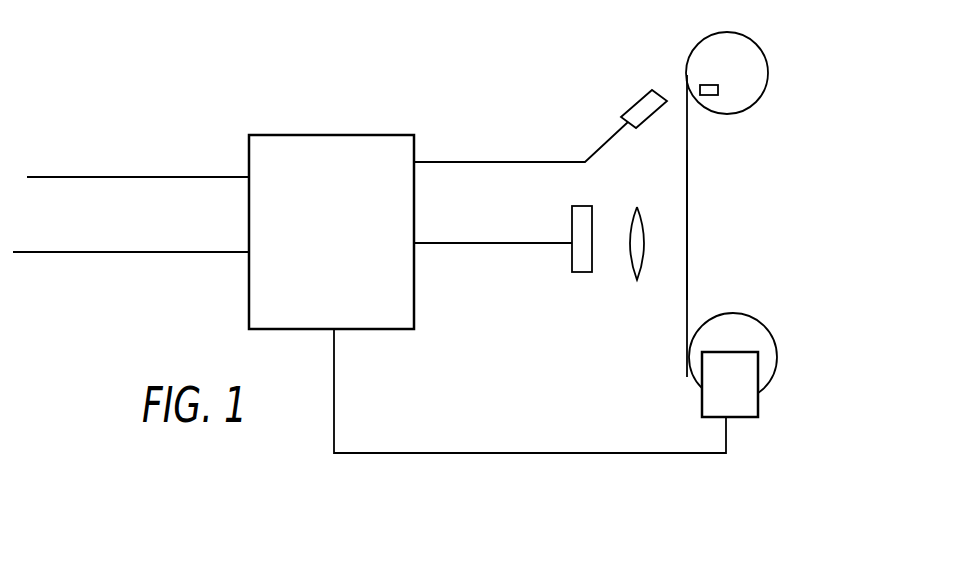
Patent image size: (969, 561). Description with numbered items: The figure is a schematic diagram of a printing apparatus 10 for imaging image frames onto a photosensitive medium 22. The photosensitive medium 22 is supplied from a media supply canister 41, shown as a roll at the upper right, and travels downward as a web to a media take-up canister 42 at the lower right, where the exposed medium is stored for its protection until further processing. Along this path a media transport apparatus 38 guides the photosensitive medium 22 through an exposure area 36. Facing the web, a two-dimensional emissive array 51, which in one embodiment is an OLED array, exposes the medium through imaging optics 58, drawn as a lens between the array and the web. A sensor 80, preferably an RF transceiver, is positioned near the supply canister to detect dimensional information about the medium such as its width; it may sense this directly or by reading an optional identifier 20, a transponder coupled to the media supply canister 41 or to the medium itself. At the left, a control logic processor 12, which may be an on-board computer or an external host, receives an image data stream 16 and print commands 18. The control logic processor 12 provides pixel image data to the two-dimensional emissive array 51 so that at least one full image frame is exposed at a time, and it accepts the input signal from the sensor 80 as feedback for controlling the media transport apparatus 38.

The printing apparatus 10 is at (838, 68).
The control logic processor 12 is at (340, 131).
The image data stream 16 is at (215, 173).
The print commands 18 is at (210, 254).
The identifier 20 is at (718, 90).
The photosensitive medium 22 is at (687, 254).
The exposure area 36 is at (687, 203).
The media transport apparatus 38 is at (702, 378).
The media supply canister 41 is at (757, 43).
The media take-up canister 42 is at (777, 377).
The two-dimensional emissive array 51 is at (570, 262).
The imaging optics 58 is at (632, 268).
The sensor 80 is at (636, 104).